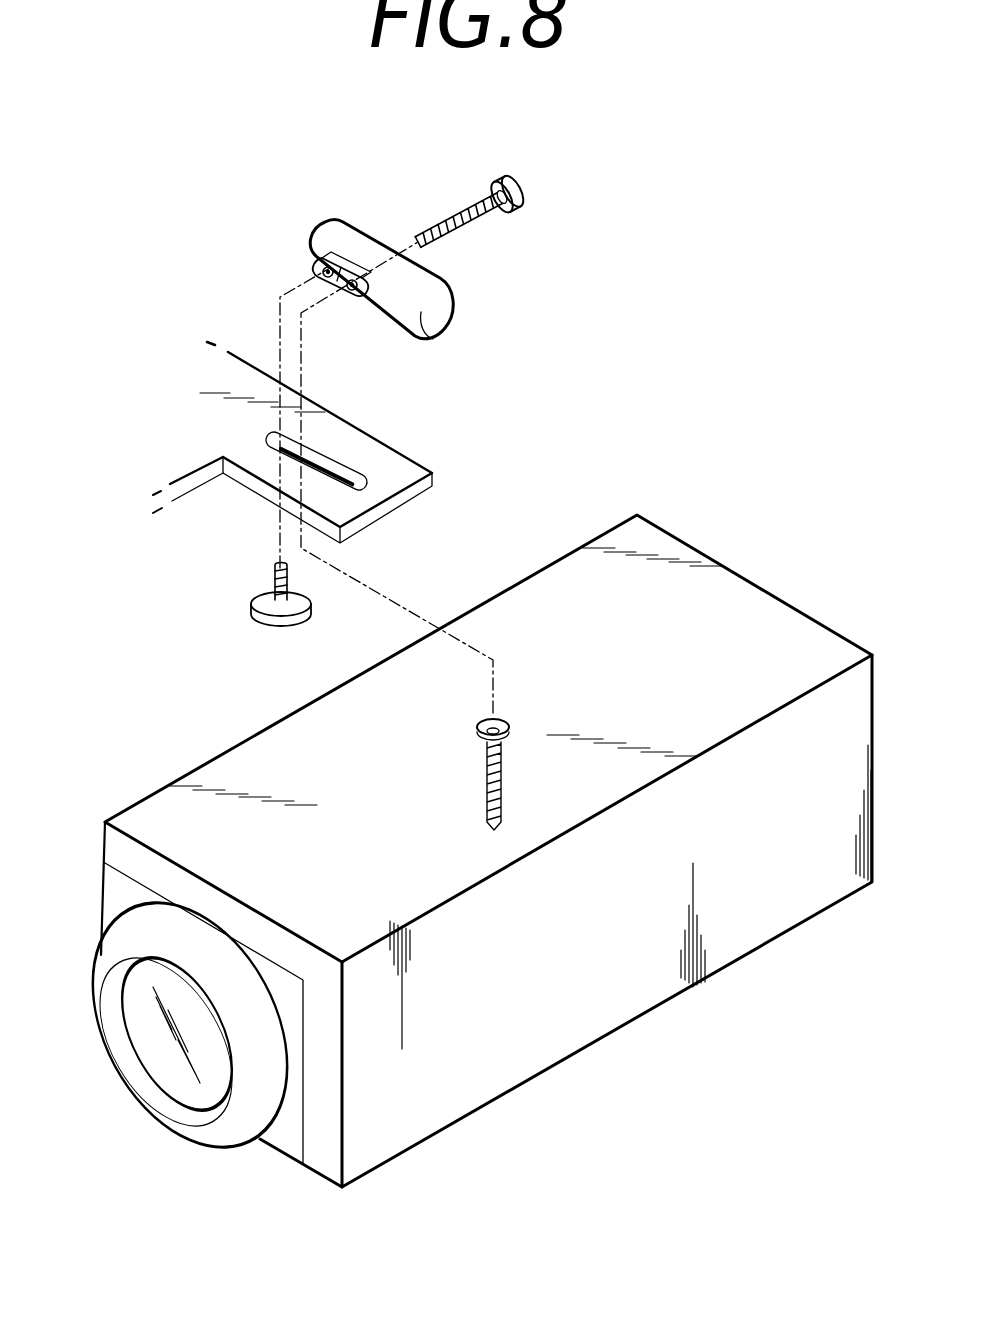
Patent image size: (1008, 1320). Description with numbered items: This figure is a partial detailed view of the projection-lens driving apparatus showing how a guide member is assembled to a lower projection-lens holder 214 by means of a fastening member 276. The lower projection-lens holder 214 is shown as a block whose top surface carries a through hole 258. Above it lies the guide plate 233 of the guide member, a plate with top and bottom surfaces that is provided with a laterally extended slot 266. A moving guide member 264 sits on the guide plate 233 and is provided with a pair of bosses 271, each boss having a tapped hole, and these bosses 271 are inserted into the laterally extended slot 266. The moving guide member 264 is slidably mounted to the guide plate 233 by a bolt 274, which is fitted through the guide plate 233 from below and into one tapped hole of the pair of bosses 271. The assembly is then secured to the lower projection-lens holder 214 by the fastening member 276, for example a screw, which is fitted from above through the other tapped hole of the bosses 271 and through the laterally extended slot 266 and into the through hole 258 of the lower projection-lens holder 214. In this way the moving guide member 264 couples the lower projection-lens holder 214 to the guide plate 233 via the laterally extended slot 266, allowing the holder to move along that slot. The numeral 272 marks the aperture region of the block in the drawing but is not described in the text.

The lower projection-lens holder 214 is at (283, 762).
The guide plate 233 is at (173, 440).
The through hole 258 is at (507, 713).
The moving guide member 264 is at (437, 331).
The laterally extended slot 266 is at (347, 477).
The bosses 271 is at (360, 270).
The block with apertures 272 is at (343, 287).
The bolt 274 is at (267, 603).
The fastening member 276 is at (524, 190).